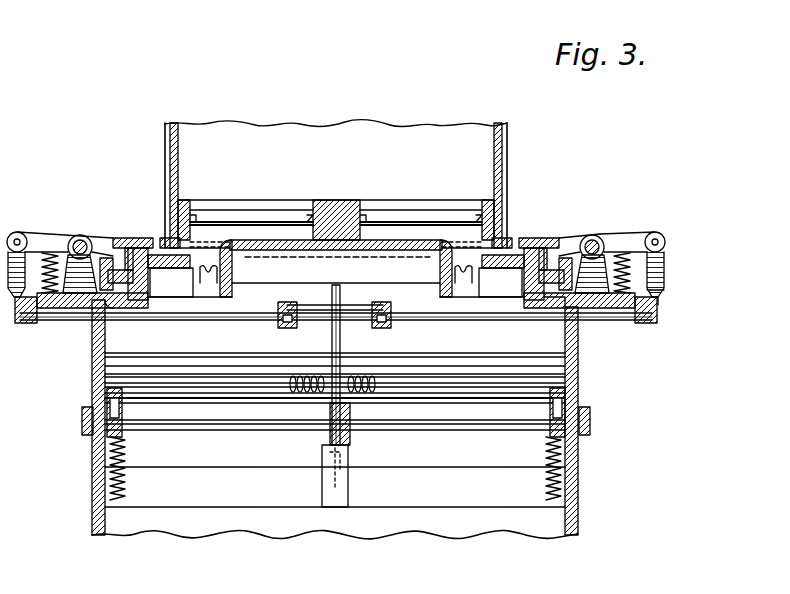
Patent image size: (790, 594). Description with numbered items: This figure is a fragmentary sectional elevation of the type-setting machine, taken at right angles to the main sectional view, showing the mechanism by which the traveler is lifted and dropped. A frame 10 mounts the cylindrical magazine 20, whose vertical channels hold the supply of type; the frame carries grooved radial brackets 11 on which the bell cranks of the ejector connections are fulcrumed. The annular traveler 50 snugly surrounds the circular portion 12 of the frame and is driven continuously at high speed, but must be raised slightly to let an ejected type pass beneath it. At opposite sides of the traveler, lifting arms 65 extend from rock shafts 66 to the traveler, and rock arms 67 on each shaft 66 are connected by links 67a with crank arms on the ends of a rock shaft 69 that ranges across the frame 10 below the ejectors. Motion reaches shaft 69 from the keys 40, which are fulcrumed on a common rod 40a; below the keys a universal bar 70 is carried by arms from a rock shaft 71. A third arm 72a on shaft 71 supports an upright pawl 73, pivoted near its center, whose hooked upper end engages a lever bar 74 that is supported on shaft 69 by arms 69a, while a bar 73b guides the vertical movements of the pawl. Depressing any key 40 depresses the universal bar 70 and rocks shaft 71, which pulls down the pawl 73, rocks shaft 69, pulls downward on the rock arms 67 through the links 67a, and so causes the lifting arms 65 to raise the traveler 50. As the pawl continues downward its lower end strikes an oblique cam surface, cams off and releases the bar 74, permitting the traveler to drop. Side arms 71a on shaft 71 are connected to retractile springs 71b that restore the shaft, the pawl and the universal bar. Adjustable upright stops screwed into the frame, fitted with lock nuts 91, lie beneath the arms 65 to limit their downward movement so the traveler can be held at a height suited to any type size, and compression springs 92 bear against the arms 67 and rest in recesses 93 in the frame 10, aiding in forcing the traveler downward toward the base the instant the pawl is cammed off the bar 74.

The frame 10 is at (578, 491).
The grooved radial brackets 11 is at (204, 284).
The circular portion 12 is at (143, 276).
The magazine 20 is at (336, 183).
The keys 40 is at (291, 380).
The rod 40a is at (508, 380).
The traveler 50 is at (130, 243).
The lifting arms 65 is at (100, 241).
The rock shafts 66 is at (598, 240).
The rock arms 67 is at (635, 238).
The links 67a is at (665, 272).
The rock shaft 69 is at (463, 327).
The arms 69a is at (392, 312).
The universal bar 70 is at (335, 407).
The rock shaft 71 is at (502, 427).
The side arms 71a is at (125, 434).
The retractile springs 71b is at (126, 460).
The third arm 72a is at (330, 438).
The upright pawl 73 is at (346, 334).
The bar 73b is at (406, 352).
The lever bar 74 is at (352, 300).
The lock nuts 91 is at (544, 303).
The compression springs 92 is at (658, 292).
The recesses 93 is at (630, 323).